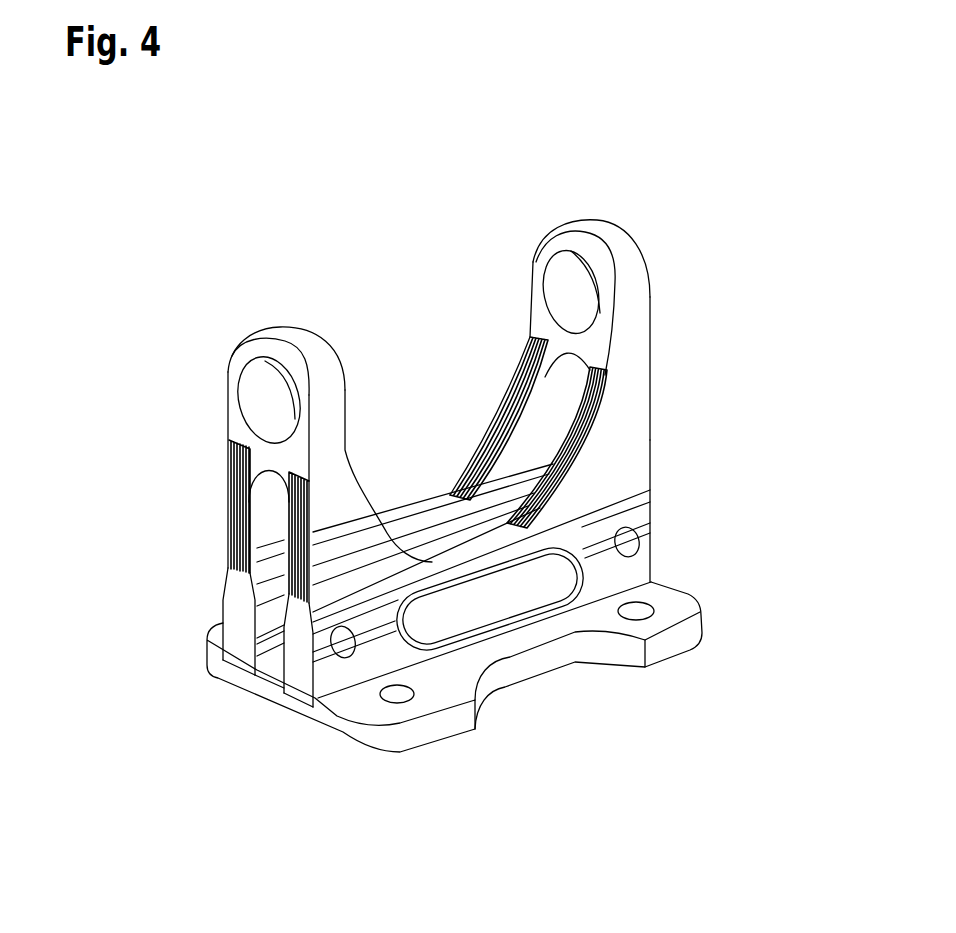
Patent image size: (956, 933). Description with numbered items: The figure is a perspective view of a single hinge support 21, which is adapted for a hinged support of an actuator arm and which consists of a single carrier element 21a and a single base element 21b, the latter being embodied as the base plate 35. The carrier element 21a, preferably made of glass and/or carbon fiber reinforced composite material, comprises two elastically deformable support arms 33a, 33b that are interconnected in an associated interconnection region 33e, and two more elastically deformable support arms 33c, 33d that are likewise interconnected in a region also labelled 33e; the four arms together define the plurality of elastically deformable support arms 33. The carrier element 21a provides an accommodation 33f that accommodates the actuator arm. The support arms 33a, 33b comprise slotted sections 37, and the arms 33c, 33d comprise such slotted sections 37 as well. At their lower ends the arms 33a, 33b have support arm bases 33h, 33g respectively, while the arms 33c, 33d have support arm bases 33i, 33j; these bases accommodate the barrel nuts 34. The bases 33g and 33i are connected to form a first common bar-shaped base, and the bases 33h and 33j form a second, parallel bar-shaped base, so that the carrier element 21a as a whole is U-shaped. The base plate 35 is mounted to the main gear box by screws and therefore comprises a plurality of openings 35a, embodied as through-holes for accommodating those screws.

The hinge support 21 is at (120, 258).
The carrier element 21a is at (680, 230).
The base element 21b is at (733, 603).
The plurality of elastically deformable support arms 33 is at (664, 393).
The elastically deformable support arm 33a is at (216, 486).
The elastically deformable support arm 33b is at (378, 484).
The elastically deformable support arm 33c is at (666, 434).
The elastically deformable support arm 33d is at (504, 340).
The interconnection region 33e is at (666, 318).
The accommodation 33f is at (256, 391).
The support arm base 33g is at (282, 695).
The support arm base 33h is at (209, 602).
The support arm base 33i is at (671, 554).
The support arm base 33j is at (457, 442).
The barrel nuts 34 is at (630, 530).
The base plate 35 is at (590, 650).
The openings 35a is at (633, 610).
The slotted sections 37 is at (215, 527).